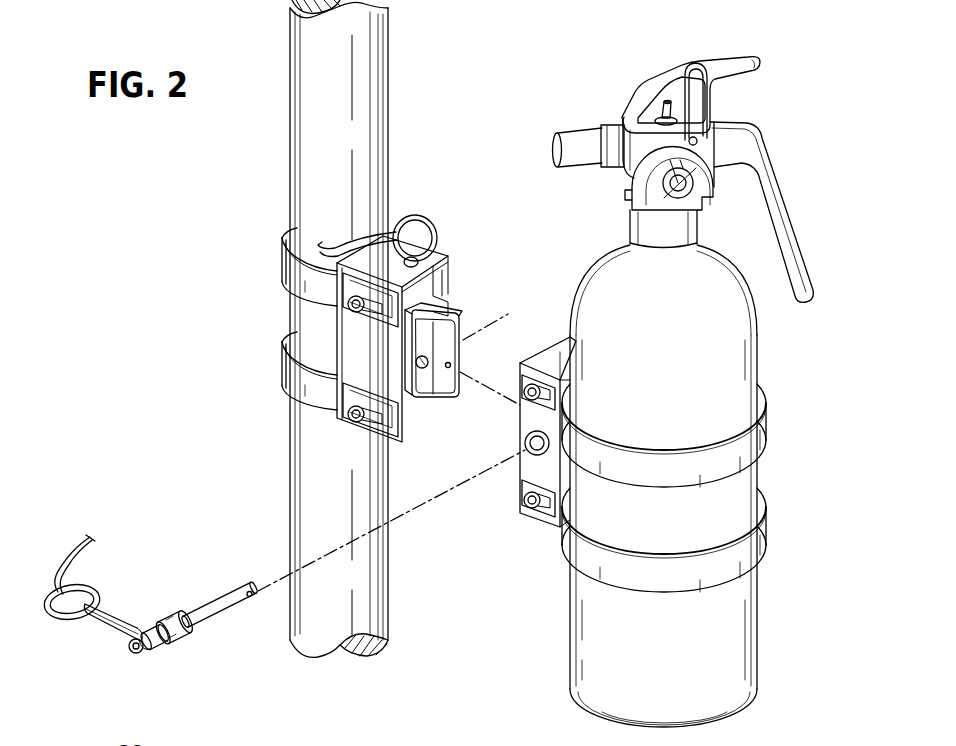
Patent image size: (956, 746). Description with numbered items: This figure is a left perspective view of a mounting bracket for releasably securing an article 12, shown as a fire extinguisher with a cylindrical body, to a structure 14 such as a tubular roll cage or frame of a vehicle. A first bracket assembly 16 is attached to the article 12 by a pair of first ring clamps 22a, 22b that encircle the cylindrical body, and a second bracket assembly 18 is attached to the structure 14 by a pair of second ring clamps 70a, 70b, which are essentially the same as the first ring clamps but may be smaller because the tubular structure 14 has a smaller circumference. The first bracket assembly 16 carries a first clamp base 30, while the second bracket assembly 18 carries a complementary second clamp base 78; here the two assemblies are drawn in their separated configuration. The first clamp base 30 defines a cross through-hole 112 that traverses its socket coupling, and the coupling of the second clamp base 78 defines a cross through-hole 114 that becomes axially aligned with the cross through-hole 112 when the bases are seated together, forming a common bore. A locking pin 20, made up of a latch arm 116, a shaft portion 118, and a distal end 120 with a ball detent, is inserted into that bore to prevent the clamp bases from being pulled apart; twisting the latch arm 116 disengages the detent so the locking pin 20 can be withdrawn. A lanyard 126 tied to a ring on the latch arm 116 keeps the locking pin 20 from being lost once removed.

The article 12 is at (742, 630).
The structure 14 is at (302, 158).
The first bracket assembly 16 is at (553, 324).
The second bracket assembly 18 is at (447, 240).
The locking pin 20 is at (158, 599).
The first ring clamp 22a is at (760, 435).
The first ring clamp 22b is at (762, 540).
The first clamp base 30 is at (543, 355).
The second ring clamp 70a is at (292, 262).
The second ring clamp 70b is at (290, 371).
The second clamp base 78 is at (412, 410).
The cross through-hole 112 is at (531, 449).
The cross through-hole 114 is at (428, 397).
The latch arm 116 is at (106, 635).
The shaft portion 118 is at (207, 600).
The distal end 120 is at (247, 570).
The lanyard 126 is at (250, 600).